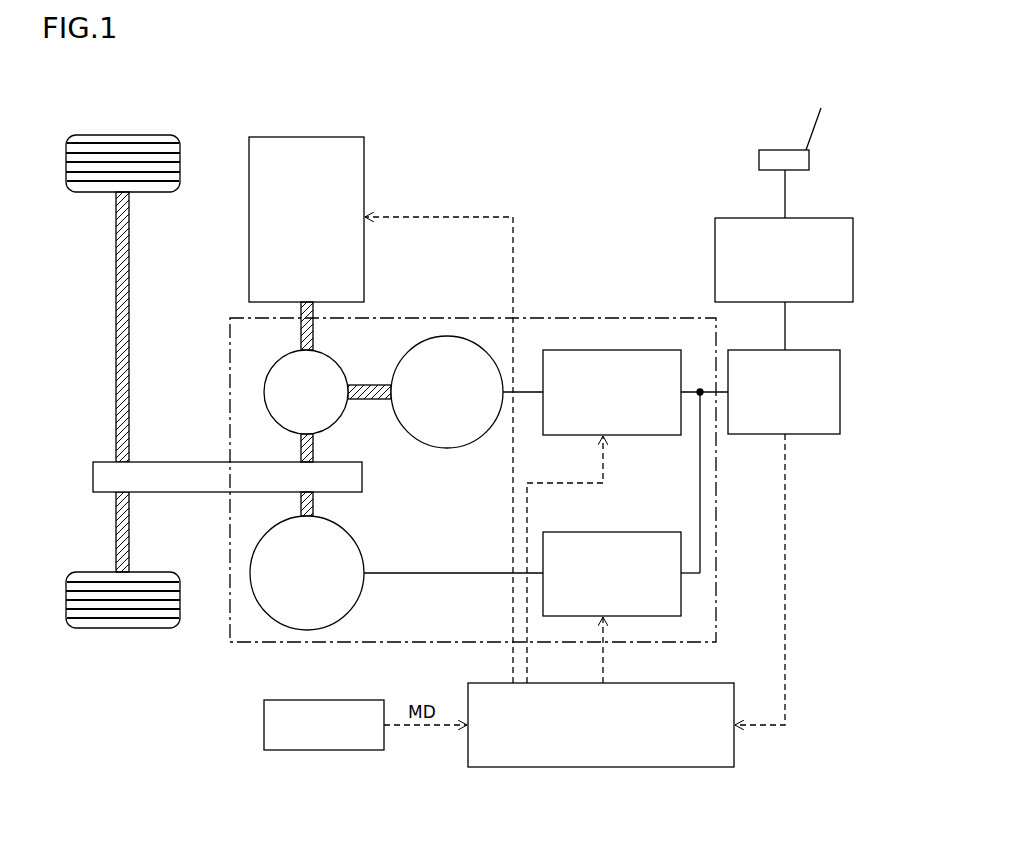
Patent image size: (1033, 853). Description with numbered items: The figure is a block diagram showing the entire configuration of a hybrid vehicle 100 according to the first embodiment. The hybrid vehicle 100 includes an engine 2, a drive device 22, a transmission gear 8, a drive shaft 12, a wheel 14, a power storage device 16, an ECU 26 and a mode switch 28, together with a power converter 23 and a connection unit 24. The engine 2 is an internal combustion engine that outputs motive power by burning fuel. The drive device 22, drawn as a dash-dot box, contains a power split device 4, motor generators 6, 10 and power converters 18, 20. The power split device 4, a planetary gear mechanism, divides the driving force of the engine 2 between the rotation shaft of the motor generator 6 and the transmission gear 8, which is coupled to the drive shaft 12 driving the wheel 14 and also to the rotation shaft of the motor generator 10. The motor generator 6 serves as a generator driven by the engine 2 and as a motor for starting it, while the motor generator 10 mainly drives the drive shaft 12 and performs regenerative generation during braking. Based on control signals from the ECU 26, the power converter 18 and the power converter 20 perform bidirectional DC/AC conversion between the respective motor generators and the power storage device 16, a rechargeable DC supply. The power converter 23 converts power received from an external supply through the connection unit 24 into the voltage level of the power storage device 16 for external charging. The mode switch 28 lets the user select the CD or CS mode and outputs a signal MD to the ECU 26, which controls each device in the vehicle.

The hybrid vehicle 100 is at (121, 86).
The wheel 14 is at (140, 134).
The drive shaft 12 is at (130, 292).
The transmission gear 8 is at (178, 461).
The engine 2 is at (324, 136).
The power split device 4 is at (276, 362).
The motor generator 6 is at (452, 447).
The motor generator 10 is at (347, 534).
The power converter 18 is at (618, 349).
The power converter 20 is at (618, 531).
The drive device 22 is at (568, 318).
The power storage device 16 is at (800, 349).
The power converter 23 is at (808, 218).
The connection unit 24 is at (768, 148).
The ECU 26 is at (703, 683).
The mode switch 28 is at (348, 699).